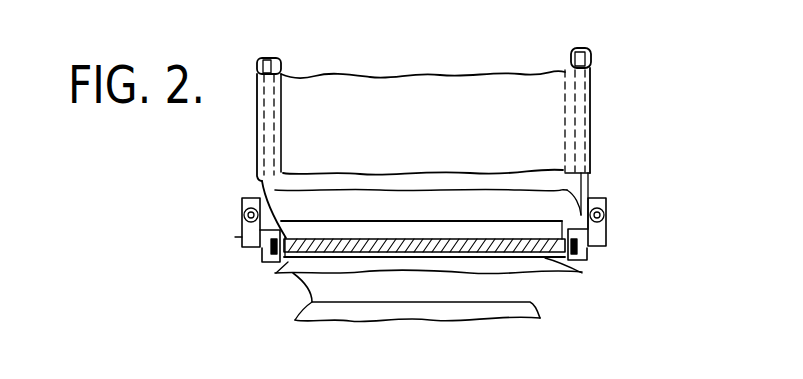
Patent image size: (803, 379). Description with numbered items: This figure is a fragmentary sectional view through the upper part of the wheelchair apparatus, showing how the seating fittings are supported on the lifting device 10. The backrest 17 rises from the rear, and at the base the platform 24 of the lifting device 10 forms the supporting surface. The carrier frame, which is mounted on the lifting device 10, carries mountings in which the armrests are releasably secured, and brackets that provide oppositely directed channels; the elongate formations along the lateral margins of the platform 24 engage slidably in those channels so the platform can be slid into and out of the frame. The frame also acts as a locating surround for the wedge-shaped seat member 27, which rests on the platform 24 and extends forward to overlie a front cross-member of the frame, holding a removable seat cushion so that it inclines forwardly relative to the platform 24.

The lifting device 10 is at (506, 292).
The backrest 17 is at (580, 100).
The platform 24 is at (350, 257).
The wedge-shaped seat member 27 is at (522, 228).